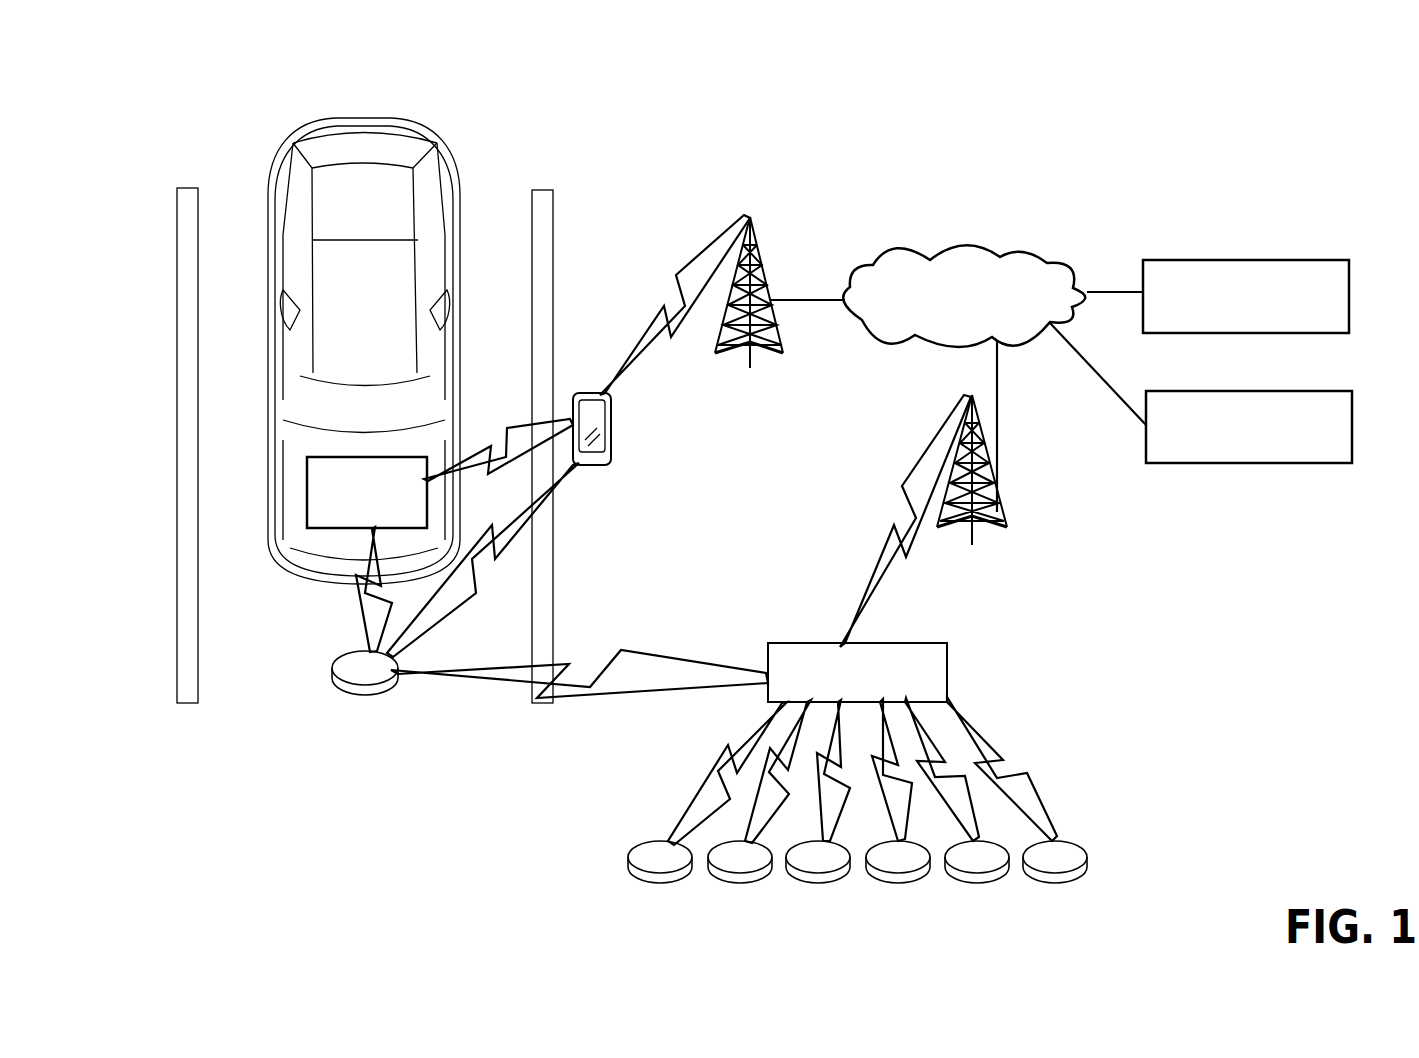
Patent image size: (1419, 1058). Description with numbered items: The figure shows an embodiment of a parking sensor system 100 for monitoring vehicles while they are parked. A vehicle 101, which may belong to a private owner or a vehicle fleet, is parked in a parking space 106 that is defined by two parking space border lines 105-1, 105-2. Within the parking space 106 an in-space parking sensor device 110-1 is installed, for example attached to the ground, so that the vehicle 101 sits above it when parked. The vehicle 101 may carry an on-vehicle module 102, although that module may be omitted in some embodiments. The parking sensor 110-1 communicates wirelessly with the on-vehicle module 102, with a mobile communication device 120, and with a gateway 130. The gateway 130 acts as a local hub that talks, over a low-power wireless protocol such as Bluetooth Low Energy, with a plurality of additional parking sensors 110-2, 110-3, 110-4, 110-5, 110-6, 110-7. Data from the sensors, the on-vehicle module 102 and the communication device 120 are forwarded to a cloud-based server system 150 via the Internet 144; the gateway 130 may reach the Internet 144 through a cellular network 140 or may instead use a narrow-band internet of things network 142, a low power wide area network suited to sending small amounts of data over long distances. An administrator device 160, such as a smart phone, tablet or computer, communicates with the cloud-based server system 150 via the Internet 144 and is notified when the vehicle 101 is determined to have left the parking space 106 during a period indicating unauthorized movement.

The parking sensor system 100 is at (146, 82).
The vehicle 101 is at (278, 148).
The on-vehicle module 102 is at (307, 482).
The parking space border line 105-1 is at (177, 188).
The parking space border line 105-2 is at (540, 190).
The parking space 106 is at (201, 304).
The in-space parking sensor device 110-1 is at (335, 655).
The parking sensor 110-2 is at (665, 880).
The parking sensor 110-3 is at (740, 880).
The parking sensor 110-4 is at (828, 880).
The parking sensor 110-5 is at (912, 880).
The parking sensor 110-6 is at (993, 880).
The parking sensor 110-7 is at (1075, 880).
The mobile communication device 120 is at (586, 392).
The gateway 130 is at (785, 643).
The cellular network 140 is at (755, 240).
The narrow-band internet of things (NB-IoT) network 142 is at (1000, 515).
The Internet 144 is at (1017, 248).
The cloud-based server system 150 is at (1140, 262).
The administrator device 160 is at (1142, 393).